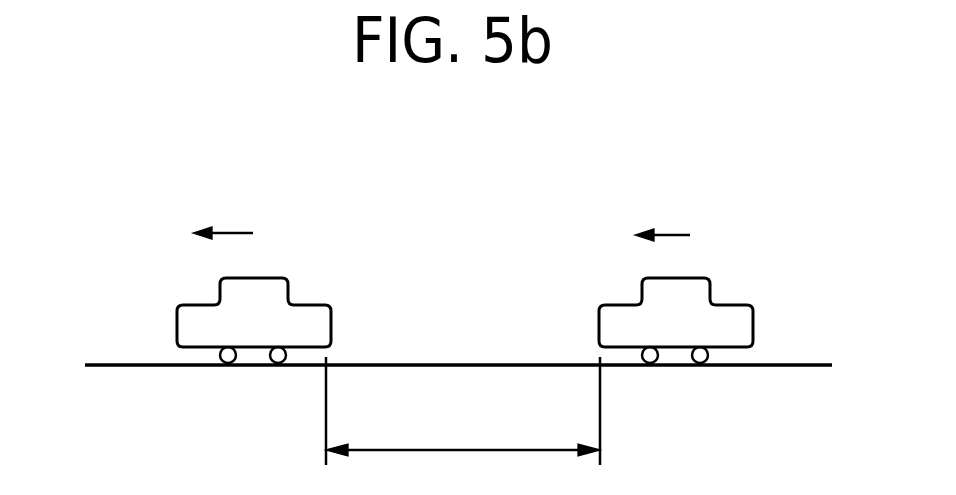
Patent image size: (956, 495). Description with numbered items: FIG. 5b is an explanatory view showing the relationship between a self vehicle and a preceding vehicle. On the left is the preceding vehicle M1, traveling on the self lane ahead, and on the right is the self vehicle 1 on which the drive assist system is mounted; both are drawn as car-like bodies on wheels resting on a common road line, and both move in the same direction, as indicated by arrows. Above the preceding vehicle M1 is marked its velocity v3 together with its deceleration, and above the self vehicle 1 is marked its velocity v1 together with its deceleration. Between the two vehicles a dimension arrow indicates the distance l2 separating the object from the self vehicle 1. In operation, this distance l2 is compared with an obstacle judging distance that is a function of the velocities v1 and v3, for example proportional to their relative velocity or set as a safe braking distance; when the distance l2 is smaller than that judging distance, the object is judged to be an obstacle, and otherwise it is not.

The preceding vehicle M1 is at (290, 297).
The vehicle 1 is at (713, 299).
The velocity of the object v3 is at (227, 205).
The velocity of the self vehicle v1 is at (668, 206).
The distance between the object and the self vehicle l2 is at (463, 411).